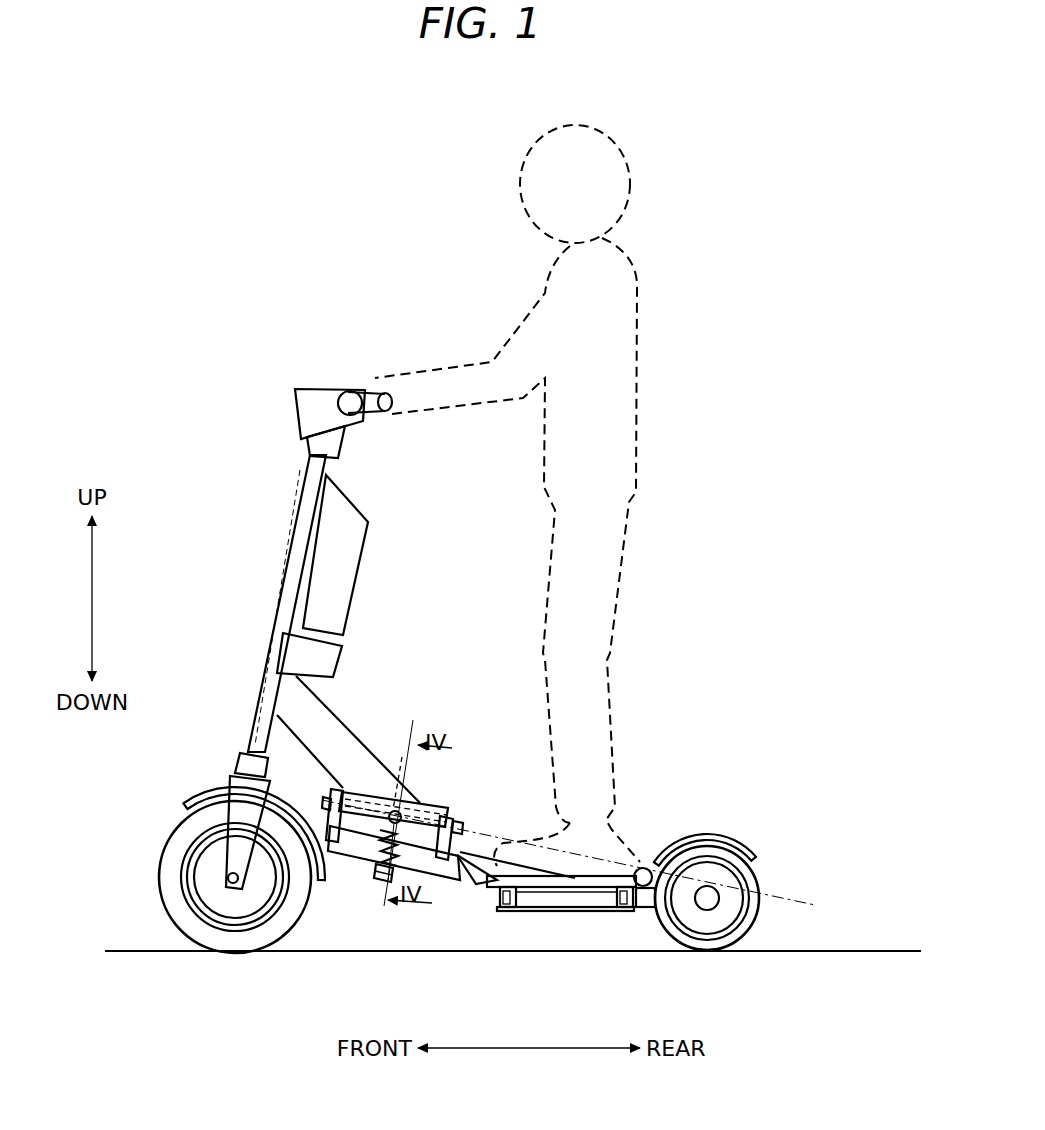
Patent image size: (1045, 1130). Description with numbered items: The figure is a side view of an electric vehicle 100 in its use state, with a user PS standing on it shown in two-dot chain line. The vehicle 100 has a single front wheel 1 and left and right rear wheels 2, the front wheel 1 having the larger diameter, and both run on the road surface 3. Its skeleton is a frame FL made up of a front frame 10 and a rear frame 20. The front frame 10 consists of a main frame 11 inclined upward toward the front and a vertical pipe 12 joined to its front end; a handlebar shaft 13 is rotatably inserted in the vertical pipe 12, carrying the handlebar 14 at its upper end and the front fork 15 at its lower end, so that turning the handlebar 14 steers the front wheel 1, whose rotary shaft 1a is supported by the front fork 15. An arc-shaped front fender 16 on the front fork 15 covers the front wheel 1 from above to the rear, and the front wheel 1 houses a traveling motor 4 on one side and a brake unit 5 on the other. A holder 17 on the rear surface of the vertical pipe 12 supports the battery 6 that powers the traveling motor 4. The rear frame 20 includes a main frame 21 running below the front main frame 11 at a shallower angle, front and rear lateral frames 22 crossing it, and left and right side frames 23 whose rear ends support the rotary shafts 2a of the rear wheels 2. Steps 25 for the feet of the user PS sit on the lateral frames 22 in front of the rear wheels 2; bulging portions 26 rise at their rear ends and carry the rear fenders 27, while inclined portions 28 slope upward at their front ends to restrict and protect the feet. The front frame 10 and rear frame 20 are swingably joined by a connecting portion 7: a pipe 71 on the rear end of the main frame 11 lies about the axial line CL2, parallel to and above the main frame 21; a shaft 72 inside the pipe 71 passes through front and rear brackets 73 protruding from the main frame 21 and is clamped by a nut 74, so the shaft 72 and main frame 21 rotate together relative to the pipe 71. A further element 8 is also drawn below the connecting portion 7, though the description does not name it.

The front wheel 1 is at (231, 877).
The rotary shaft 1a is at (226, 882).
The rear wheels 2 is at (733, 898).
The rotary shafts 2a is at (720, 895).
The road surface 3 is at (880, 950).
The traveling motor 4 is at (269, 879).
The brake unit 5 is at (262, 890).
The battery 6 is at (362, 558).
The connecting portion 7 is at (415, 799).
The spring 8 is at (382, 832).
The front frame 10 is at (415, 799).
The main frame 11 is at (340, 702).
The vertical pipe 12 is at (281, 582).
The handlebar shaft 13 is at (262, 700).
The handlebar 14 is at (371, 388).
The front fork 15 is at (233, 820).
The front fender 16 is at (215, 794).
The holder 17 is at (302, 658).
The rear frame 20 is at (567, 880).
The main frame 21 is at (450, 868).
The lateral frames 22 is at (505, 908).
The side frames 23 is at (577, 912).
The steps 25 is at (577, 848).
The bulging portions 26 is at (651, 868).
The rear fenders 27 is at (715, 836).
The inclined portions 28 is at (480, 880).
The pipe 71 is at (418, 803).
The shaft 72 is at (392, 806).
The brackets 73 is at (328, 806).
The nut 74 is at (455, 822).
The vehicle 100 is at (254, 535).
The user PS is at (648, 322).
The frame FL is at (457, 703).
The axial line CL2 is at (591, 859).